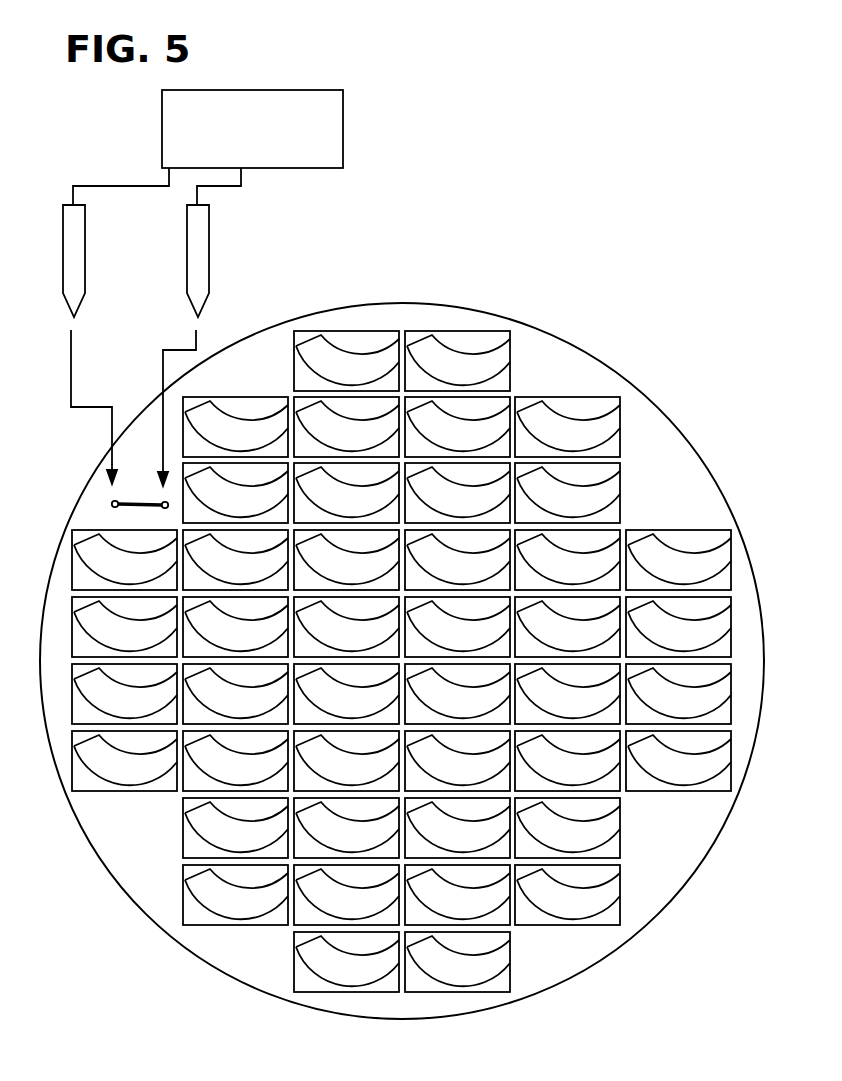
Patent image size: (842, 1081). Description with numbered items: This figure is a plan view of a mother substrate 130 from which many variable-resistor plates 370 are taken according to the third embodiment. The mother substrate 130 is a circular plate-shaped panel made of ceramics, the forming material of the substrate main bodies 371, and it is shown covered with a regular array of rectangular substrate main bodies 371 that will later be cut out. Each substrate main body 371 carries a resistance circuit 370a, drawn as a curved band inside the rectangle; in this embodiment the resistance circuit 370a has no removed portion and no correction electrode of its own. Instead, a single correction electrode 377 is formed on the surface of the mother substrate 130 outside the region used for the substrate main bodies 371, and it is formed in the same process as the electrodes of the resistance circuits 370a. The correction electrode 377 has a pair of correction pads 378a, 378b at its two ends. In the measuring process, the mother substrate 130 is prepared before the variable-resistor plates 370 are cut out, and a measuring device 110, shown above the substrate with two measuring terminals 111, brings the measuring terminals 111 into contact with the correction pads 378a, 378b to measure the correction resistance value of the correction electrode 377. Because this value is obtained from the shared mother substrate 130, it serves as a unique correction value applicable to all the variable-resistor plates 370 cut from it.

The measuring device 110 is at (343, 101).
The measuring terminals 111 is at (85, 250).
The mother substrate 130 is at (632, 382).
The variable-resistor plates 370 is at (715, 768).
The resistance circuit 370a is at (358, 347).
The substrate main body 371 is at (593, 478).
The correction electrode 377 is at (146, 501).
The correction pad 378a is at (111, 504).
The correction pad 378b is at (162, 508).